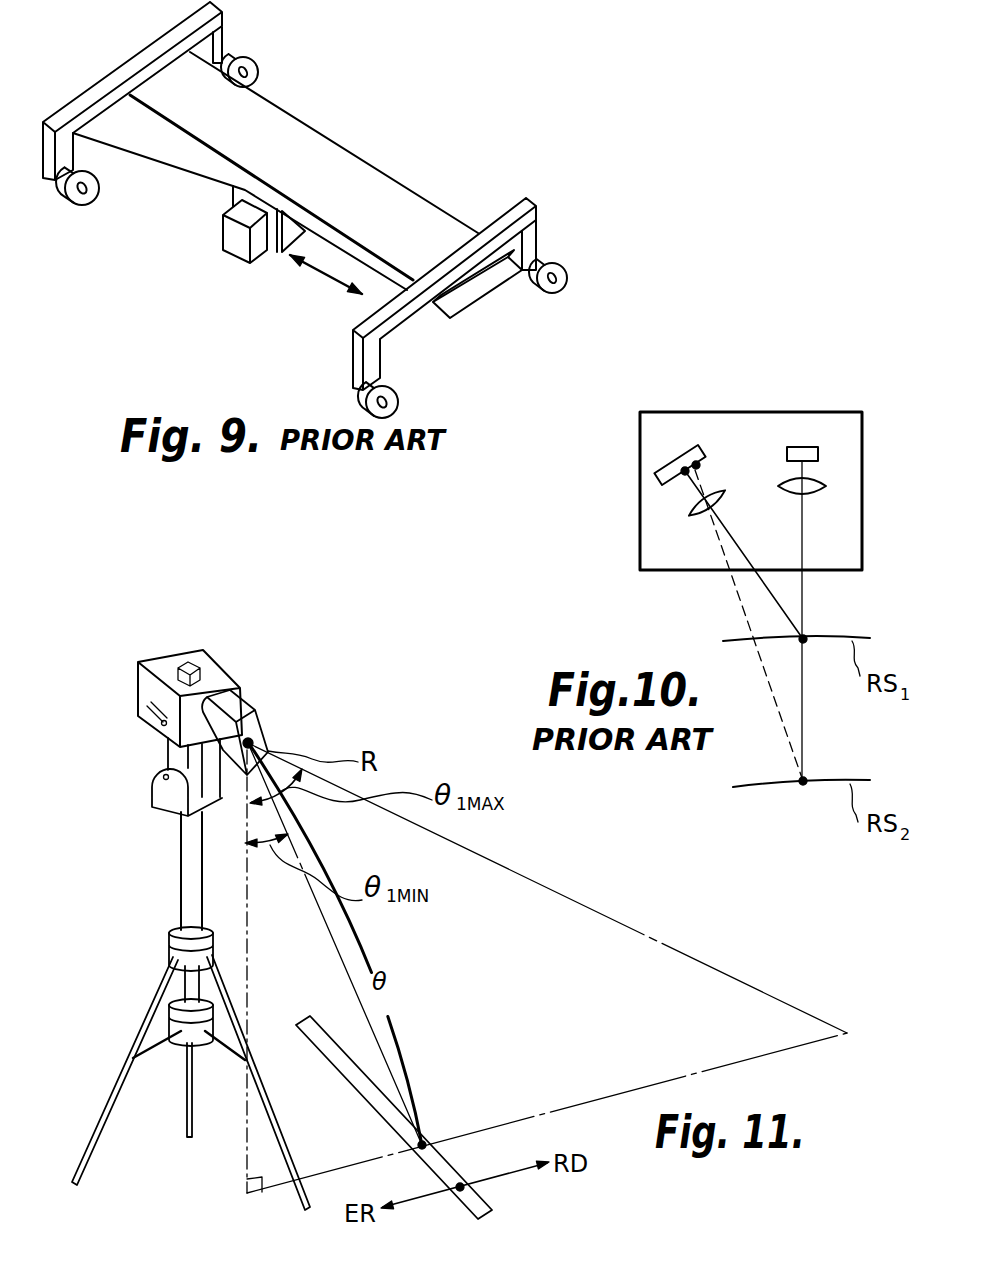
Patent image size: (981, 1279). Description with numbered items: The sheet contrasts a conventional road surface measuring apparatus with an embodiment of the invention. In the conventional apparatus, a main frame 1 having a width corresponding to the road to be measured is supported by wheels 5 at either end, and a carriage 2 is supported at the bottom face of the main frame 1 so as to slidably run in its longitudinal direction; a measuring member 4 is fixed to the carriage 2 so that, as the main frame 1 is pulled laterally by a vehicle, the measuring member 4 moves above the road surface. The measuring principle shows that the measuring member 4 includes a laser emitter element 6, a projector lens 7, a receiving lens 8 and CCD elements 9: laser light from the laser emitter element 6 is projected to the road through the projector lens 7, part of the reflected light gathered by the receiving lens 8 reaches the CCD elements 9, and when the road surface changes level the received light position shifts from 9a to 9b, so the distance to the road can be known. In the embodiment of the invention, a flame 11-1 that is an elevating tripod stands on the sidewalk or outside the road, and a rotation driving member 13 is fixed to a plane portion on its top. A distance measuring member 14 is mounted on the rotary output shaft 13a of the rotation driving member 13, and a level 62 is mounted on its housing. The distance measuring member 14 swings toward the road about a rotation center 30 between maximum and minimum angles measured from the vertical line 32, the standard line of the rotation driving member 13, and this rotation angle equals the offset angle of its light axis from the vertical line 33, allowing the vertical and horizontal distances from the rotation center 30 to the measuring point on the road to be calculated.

In FIG. 9, the main frame 1 is at (386, 190).
In FIG. 9, the carriage 2 is at (278, 252).
In FIG. 9, the measuring member 4 is at (236, 251).
In FIG. 10, the measuring member 4 is at (640, 556).
In FIG. 9, the wheels 5 is at (570, 276).
In FIG. 10, the laser emitter element 6 is at (802, 447).
In FIG. 10, the projector lens 7 is at (826, 486).
In FIG. 10, the receiving lens 8 is at (690, 505).
In FIG. 10, the CCD elements 9 is at (656, 463).
In FIG. 10, the received light position 9a is at (684, 468).
In FIG. 10, the received light position 9b is at (696, 465).
In FIG. 11, the rotation driving member 13 is at (143, 660).
In FIG. 11, the output shaft 13a is at (206, 694).
In FIG. 11, the rotation center 30 is at (262, 740).
In FIG. 11, the distance measuring member 14 is at (266, 742).
In FIG. 11, the level 62 is at (158, 725).
In FIG. 11, the flame 11-1 is at (181, 887).
In FIG. 11, the vertical line 33 is at (246, 1147).
In FIG. 11, the vertical line 32 is at (246, 1175).